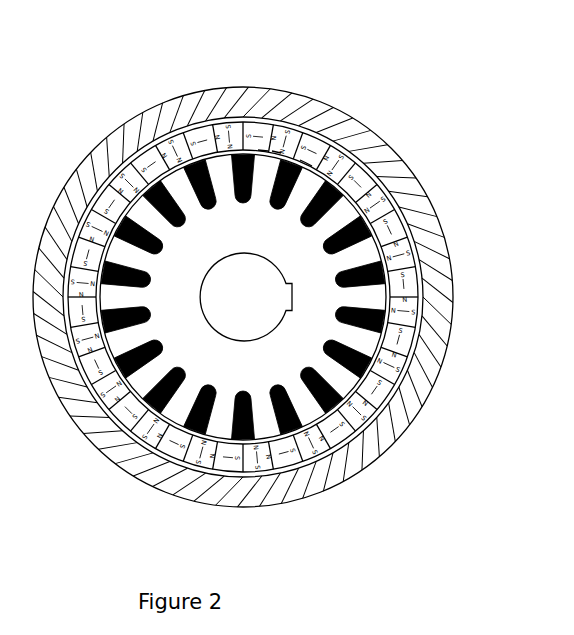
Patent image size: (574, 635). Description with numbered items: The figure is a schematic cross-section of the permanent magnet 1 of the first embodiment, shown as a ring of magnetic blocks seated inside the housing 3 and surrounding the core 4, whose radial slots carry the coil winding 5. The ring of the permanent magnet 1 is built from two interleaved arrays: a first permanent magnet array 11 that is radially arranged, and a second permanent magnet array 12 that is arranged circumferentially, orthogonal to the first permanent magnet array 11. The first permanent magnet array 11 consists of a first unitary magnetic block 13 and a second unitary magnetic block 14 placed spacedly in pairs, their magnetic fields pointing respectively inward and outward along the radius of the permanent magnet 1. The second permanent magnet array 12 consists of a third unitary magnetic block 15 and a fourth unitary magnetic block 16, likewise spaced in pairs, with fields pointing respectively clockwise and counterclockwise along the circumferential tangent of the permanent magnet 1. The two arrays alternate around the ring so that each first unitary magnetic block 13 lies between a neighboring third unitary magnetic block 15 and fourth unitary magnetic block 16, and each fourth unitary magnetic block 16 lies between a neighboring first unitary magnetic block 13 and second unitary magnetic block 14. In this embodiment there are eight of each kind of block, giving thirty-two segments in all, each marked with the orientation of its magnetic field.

The permanent magnet 1 is at (243, 248).
The housing 3 is at (415, 200).
The core 4 is at (286, 297).
The coil winding 5 is at (338, 288).
The first permanent magnet array 11 is at (217, 130).
The second permanent magnet array 12 is at (392, 207).
The first unitary magnetic block 13 is at (277, 146).
The second unitary magnetic block 14 is at (342, 203).
The third unitary magnetic block 15 is at (264, 146).
The fourth unitary magnetic block 16 is at (305, 167).